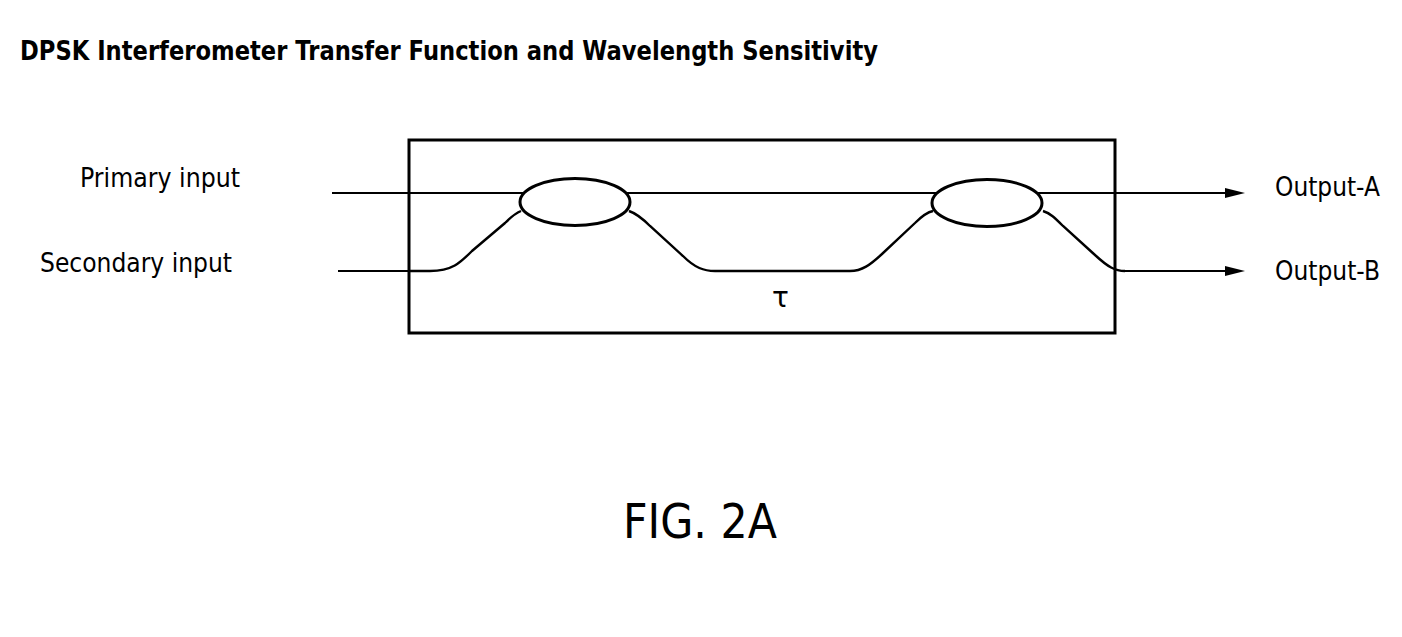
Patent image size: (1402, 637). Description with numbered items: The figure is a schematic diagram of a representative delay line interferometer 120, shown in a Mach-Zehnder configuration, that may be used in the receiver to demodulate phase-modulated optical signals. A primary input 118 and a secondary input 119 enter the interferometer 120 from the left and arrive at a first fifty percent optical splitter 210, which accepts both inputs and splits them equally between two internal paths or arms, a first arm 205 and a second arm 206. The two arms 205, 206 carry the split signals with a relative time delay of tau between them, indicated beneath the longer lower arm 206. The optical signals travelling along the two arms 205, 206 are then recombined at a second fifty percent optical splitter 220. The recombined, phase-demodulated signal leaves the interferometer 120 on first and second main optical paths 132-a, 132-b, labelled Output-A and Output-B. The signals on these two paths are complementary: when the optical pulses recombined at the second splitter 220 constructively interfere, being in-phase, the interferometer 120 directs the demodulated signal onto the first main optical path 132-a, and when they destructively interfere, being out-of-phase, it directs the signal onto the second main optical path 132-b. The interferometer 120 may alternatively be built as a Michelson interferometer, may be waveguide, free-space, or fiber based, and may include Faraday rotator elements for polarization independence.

The delay line interferometer 120 is at (428, 140).
The primary input 118 is at (386, 193).
The secondary input 119 is at (388, 271).
The first internal path (arm) 205 is at (740, 193).
The second internal path (arm) 206 is at (740, 271).
The first 50% optical splitter 210 is at (570, 227).
The second 50% optical splitter 220 is at (990, 227).
The first main optical path 132-a is at (1165, 192).
The second main optical path 132-b is at (1163, 270).